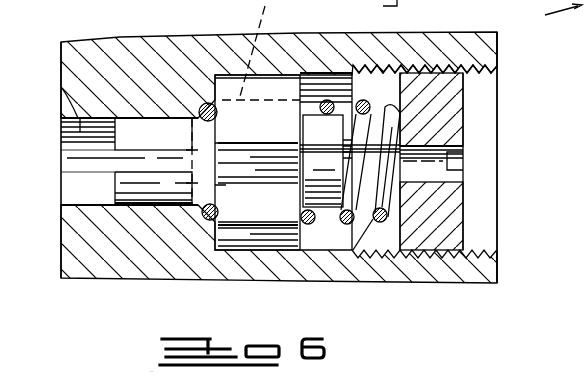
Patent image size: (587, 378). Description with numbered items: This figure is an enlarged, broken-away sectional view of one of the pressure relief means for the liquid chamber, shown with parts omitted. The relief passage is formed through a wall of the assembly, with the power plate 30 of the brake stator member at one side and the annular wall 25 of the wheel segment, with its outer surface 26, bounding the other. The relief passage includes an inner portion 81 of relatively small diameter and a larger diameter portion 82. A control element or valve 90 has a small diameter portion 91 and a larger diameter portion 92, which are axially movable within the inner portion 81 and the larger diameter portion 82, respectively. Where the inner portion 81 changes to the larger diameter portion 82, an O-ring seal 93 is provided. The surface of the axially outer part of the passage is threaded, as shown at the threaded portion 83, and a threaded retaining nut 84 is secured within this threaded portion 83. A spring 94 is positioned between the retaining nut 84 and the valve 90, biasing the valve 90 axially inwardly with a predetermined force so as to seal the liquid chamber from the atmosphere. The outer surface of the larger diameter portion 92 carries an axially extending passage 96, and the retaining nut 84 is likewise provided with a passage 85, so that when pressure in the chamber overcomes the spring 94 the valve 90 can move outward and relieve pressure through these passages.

The annular wall 25 is at (403, 262).
The outer surface 26 is at (497, 270).
The power plate 30 is at (62, 84).
The inner portion 81 is at (129, 161).
The larger diameter portion 82 is at (485, 170).
The threaded portion 83 is at (477, 70).
The threaded retaining nut 84 is at (453, 222).
The passage 85 is at (442, 136).
The valve 90 is at (260, 226).
The small diameter portion 91 is at (153, 134).
The larger diameter portion 92 is at (251, 162).
The O-ring seal 93 is at (200, 110).
The spring 94 is at (344, 256).
The axially extending passage 96 is at (243, 102).